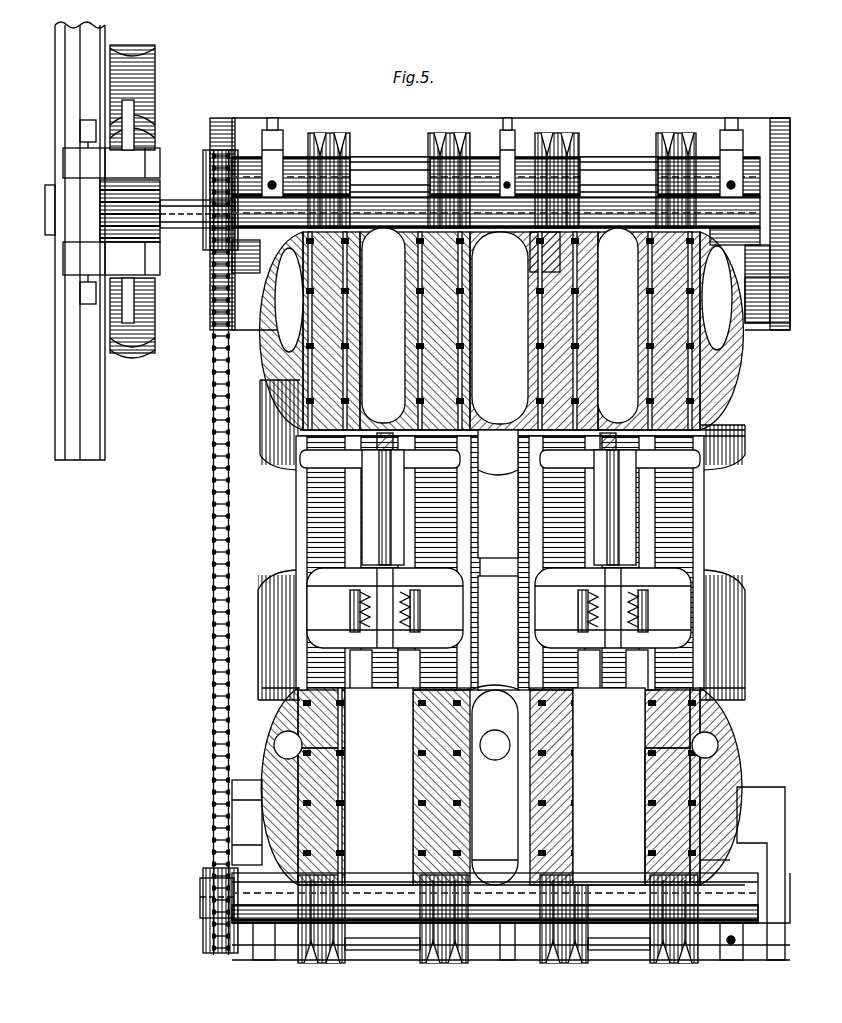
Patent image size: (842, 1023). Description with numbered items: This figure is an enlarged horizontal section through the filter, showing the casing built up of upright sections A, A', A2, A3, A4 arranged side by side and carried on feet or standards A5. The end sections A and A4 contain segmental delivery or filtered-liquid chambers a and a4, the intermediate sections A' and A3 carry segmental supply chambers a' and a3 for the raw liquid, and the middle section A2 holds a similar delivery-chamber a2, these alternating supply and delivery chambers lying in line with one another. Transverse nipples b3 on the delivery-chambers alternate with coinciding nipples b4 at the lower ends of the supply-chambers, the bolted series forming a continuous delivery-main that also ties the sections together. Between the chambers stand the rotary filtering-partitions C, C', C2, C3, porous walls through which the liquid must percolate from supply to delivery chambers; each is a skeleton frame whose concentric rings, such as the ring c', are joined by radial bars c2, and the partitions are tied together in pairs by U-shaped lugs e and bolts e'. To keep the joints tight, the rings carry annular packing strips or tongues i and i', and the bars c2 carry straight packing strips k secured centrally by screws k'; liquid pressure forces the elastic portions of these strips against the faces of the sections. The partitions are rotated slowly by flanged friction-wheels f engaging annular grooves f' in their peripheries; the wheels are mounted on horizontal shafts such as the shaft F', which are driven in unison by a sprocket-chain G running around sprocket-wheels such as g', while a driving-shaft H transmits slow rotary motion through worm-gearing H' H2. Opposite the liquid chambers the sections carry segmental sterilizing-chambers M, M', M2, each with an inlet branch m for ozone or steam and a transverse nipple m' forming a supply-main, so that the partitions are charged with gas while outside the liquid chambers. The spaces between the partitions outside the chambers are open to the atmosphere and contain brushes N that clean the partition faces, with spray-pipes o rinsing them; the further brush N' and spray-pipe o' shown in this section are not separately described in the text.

The worm-gearing H2 is at (150, 90).
The worm-gearing H' is at (139, 220).
The driving-shaft H is at (143, 318).
The horizontal shaft F' is at (197, 550).
The sprocket-wheel g' is at (209, 551).
The sprocket-chain G is at (211, 552).
The transverse nipple b3 is at (265, 172).
The coinciding nipple b4 is at (398, 157).
The flanged friction-wheel f is at (492, 561).
The annular groove f' is at (497, 953).
The end section A is at (299, 331).
The segmental delivery-chamber a is at (289, 300).
The intermediate section A' is at (415, 329).
The segmental supply chamber a' is at (383, 325).
The middle section A2 is at (534, 331).
The delivery-chamber a2 is at (500, 328).
The intermediate section A3 is at (649, 329).
The segmental supply chamber a3 is at (618, 325).
The end section A4 is at (733, 331).
The segmental delivery-chamber a4 is at (717, 298).
The feet or standards A5 is at (763, 618).
The radial bar c2 is at (532, 262).
The straight packing strip k is at (500, 551).
The U-shaped lug e is at (500, 546).
The spray-pipe o is at (383, 507).
The rod o' is at (614, 507).
The brush N is at (499, 608).
The pawl N' is at (517, 612).
The bolt e' is at (518, 608).
The annular packing strip i' is at (500, 689).
The concentric ring c' is at (503, 679).
The filtering-partition C is at (279, 786).
The sterilizing-chamber M is at (310, 816).
The screw k' is at (499, 786).
The filtering-partition C2 is at (495, 787).
The central sterilizing-chamber M' is at (495, 837).
The filtering-partition C' is at (529, 786).
The filtering-partition C3 is at (690, 805).
The sterilizing-chamber M2 is at (715, 838).
The inlet branch m is at (496, 745).
The annular packing strip i is at (495, 896).
The transverse nipple m' is at (742, 941).